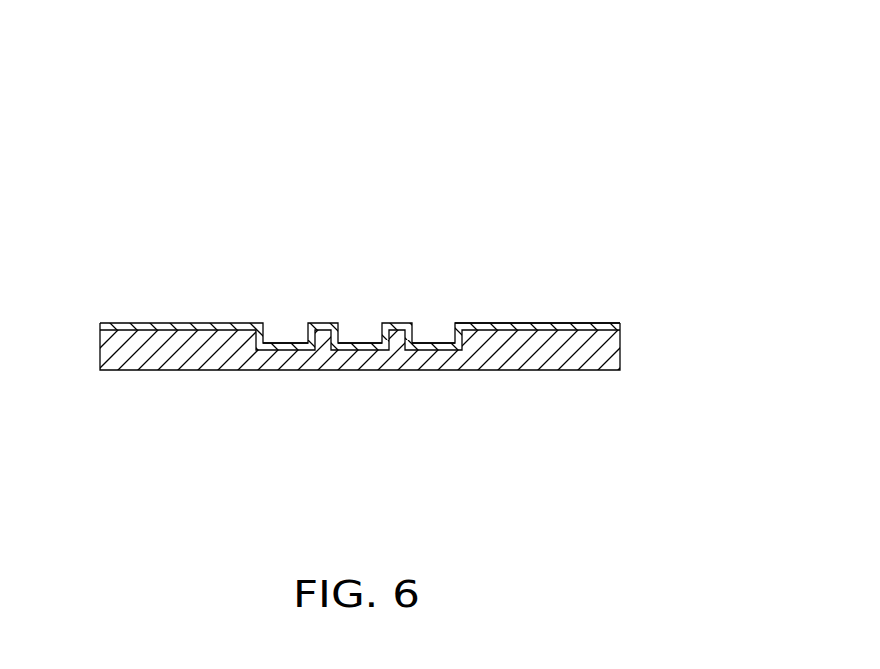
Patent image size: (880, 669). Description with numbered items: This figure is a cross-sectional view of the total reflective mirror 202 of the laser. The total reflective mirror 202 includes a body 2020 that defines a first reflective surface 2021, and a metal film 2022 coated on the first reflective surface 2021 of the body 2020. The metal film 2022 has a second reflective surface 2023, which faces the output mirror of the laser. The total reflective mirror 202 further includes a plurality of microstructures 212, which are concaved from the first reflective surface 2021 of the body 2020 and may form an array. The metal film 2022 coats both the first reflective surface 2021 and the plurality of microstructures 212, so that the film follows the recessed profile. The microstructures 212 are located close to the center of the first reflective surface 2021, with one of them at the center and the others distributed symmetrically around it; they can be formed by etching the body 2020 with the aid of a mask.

The total reflective mirror 202 is at (456, 66).
The body 2020 is at (379, 313).
The first reflective surface 2021 is at (128, 333).
The metal film 2022 is at (578, 328).
The second reflective surface 2023 is at (148, 322).
The microstructures 212 is at (425, 330).